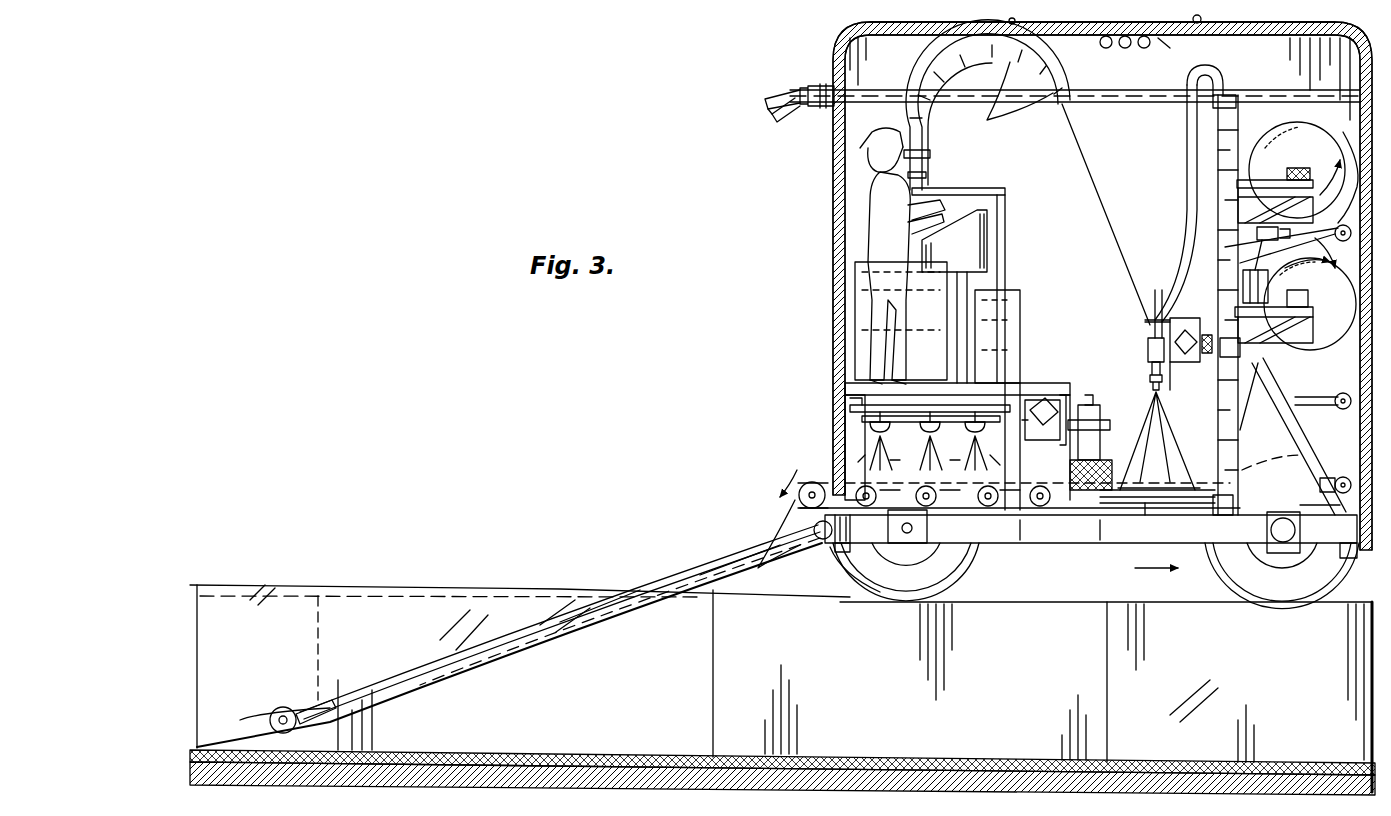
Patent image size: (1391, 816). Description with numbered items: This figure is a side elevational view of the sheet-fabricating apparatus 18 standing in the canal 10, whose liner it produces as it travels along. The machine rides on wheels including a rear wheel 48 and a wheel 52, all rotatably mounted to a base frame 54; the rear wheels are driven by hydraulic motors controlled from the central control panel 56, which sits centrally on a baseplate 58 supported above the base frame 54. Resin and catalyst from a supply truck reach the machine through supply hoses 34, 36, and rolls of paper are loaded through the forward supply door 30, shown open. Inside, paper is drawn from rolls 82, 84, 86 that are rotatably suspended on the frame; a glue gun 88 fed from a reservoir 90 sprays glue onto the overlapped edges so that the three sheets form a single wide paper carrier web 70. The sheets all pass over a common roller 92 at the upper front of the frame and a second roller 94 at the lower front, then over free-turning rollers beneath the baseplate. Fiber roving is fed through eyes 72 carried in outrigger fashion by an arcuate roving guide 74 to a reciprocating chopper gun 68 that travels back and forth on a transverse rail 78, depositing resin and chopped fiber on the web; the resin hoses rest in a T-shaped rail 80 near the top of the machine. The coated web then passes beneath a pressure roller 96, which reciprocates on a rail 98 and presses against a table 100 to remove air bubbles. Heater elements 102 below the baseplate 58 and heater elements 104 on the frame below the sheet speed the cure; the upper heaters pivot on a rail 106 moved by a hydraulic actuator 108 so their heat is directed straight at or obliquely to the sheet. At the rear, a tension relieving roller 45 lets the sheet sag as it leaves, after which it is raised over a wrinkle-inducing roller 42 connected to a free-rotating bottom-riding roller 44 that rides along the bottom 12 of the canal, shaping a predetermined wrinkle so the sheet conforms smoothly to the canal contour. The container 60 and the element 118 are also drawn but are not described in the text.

The canal 10 is at (1202, 722).
The bottom of the canal 12 is at (370, 750).
The fabricating apparatus 18 is at (826, 270).
The forward supply door 30 is at (1255, 35).
The supply hose 34 is at (800, 90).
The supply hose 36 is at (786, 108).
The wrinkle-inducing roller 42 is at (652, 585).
The bottom-riding roller 44 is at (250, 710).
The tension relieving roller 45 is at (800, 505).
The rear wheel 48 is at (830, 557).
The wheel 52 is at (1228, 570).
The base frame 54 is at (1049, 535).
The central control panel 56 is at (976, 208).
The baseplate 58 is at (860, 386).
The cabinet 60 is at (856, 300).
The chopper gun 68 is at (1150, 326).
The paper carrier web 70 is at (1152, 500).
The eyes 72 is at (1050, 193).
The arcuate roving guide 74 is at (940, 60).
The rail 78 is at (1205, 368).
The T-shaped rail 80 is at (1239, 96).
The roll of paper 82 is at (1192, 230).
The roll of paper 84 is at (1303, 122).
The roll of paper 86 is at (1336, 342).
The glue gun 88 is at (1255, 236).
The reservoir 90 is at (1268, 284).
The common roller 92 is at (1343, 134).
The second roller 94 is at (1340, 470).
The pressure roller 96 is at (1112, 470).
The rail 98 is at (1068, 398).
The table 100 is at (1054, 500).
The heater elements 102 is at (872, 432).
The heater elements 104 is at (905, 513).
The rail 106 is at (965, 397).
The hydraulic actuator 108 is at (852, 410).
The spray nozzle 118 is at (1150, 372).